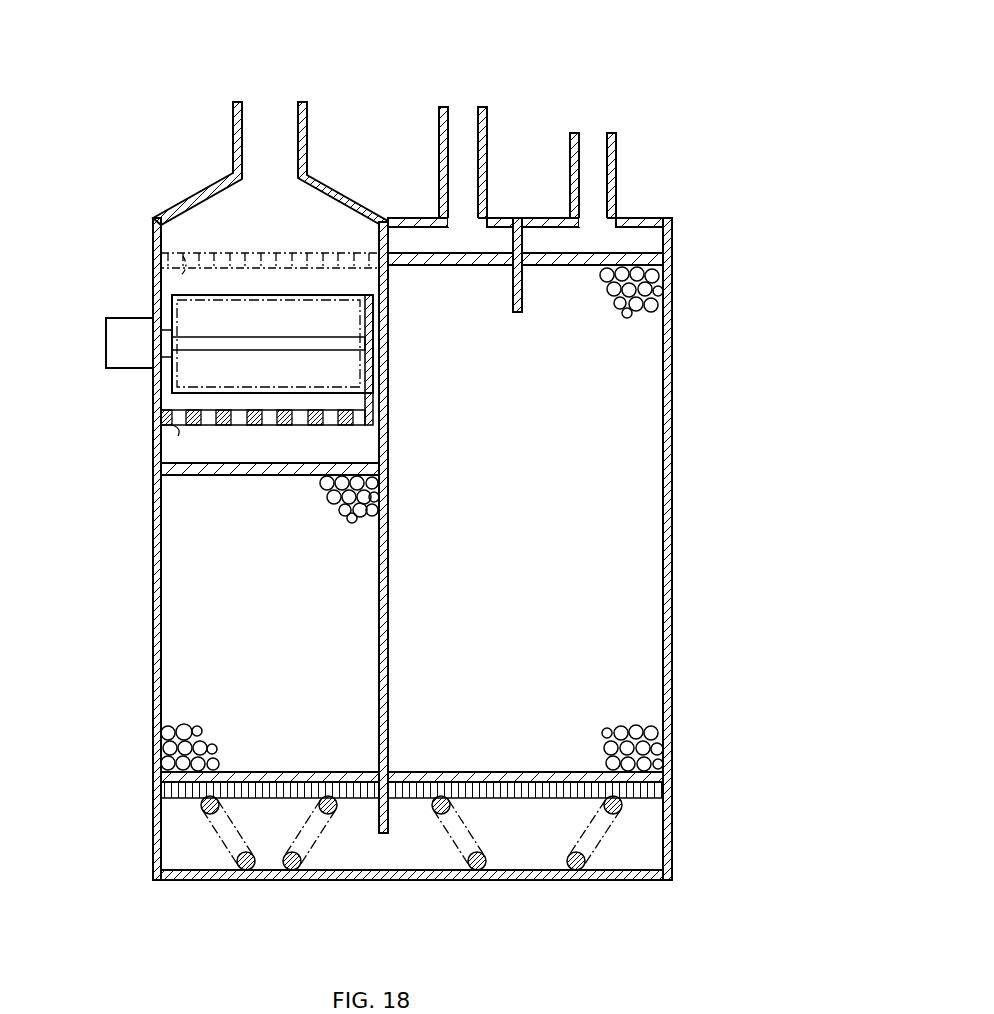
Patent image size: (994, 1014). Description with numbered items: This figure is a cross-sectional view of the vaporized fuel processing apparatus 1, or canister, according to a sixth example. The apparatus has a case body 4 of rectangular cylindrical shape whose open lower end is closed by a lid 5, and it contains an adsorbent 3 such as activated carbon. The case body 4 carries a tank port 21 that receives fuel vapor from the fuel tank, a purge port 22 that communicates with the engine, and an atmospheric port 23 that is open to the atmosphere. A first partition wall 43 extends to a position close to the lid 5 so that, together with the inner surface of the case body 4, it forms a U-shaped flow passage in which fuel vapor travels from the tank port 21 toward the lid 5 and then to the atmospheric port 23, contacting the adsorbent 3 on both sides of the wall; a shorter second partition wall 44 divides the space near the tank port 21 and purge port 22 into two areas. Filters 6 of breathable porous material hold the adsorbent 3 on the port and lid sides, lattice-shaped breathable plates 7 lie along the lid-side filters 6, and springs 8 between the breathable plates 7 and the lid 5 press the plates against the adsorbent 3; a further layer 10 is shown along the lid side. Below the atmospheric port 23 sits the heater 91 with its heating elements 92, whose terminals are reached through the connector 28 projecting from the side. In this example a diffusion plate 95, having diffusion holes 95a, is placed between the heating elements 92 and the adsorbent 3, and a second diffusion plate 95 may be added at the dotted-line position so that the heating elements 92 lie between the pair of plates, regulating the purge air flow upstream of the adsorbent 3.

The vaporized fuel processing apparatus 1 is at (628, 100).
The adsorbent 3 is at (640, 282).
The case body 4 is at (152, 585).
The lid 5 is at (625, 875).
The filters 6 is at (423, 257).
The breathable plates 7 is at (185, 790).
The springs 8 is at (236, 860).
The filter layer 10 is at (152, 801).
The tank port 21 is at (592, 153).
The purge port 22 is at (460, 123).
The atmospheric port 23 is at (278, 117).
The connector 28 is at (125, 343).
The first partition wall 43 is at (386, 645).
The second partition wall 44 is at (518, 295).
The heater 91 is at (195, 377).
The heating elements 92 is at (195, 297).
The diffusion plate 95 is at (175, 258).
The diffusion holes 95a is at (183, 276).